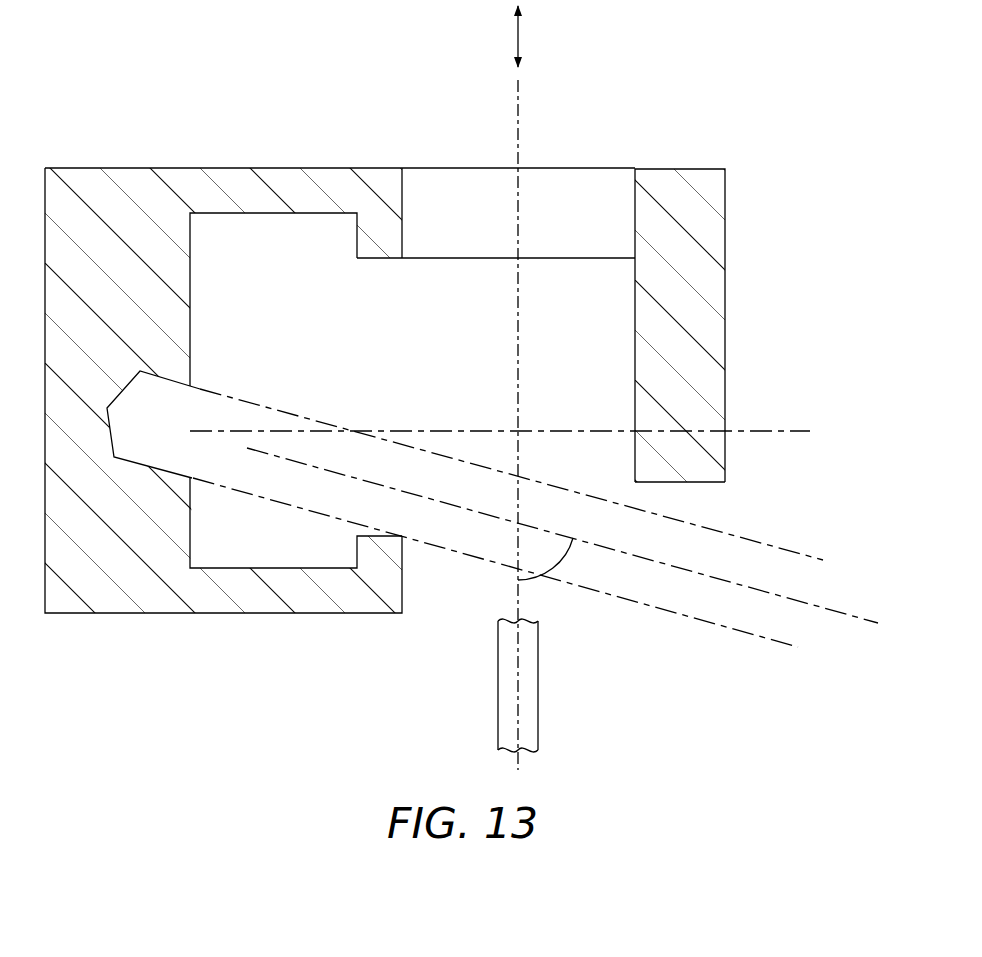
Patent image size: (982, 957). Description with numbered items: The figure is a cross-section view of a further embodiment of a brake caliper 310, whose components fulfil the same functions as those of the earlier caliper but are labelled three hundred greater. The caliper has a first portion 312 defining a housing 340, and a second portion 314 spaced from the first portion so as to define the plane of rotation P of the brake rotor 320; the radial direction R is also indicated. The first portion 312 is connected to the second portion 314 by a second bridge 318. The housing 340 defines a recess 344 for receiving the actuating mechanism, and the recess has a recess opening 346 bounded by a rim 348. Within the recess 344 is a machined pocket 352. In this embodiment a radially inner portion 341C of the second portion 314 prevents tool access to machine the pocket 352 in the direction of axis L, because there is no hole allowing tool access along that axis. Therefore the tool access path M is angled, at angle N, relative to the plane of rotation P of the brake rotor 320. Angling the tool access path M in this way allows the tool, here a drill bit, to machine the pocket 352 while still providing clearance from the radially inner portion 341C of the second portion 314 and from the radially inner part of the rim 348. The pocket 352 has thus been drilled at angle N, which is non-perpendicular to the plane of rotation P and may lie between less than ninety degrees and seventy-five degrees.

The brake caliper 310 is at (491, 478).
The first portion 312 is at (72, 168).
The housing 340 is at (238, 168).
The second bridge 318 is at (600, 168).
The rim 348 is at (404, 186).
The recess opening 346 is at (404, 281).
The recess 344 is at (339, 352).
The pocket 352 is at (179, 472).
The second portion 314 is at (727, 200).
The radially inner portion 341C is at (710, 483).
The brake rotor 320 is at (540, 683).
The plane of rotation P is at (522, 88).
The radial direction R is at (522, 32).
The axis L is at (780, 428).
The tool access path M is at (834, 606).
The angle N is at (558, 578).